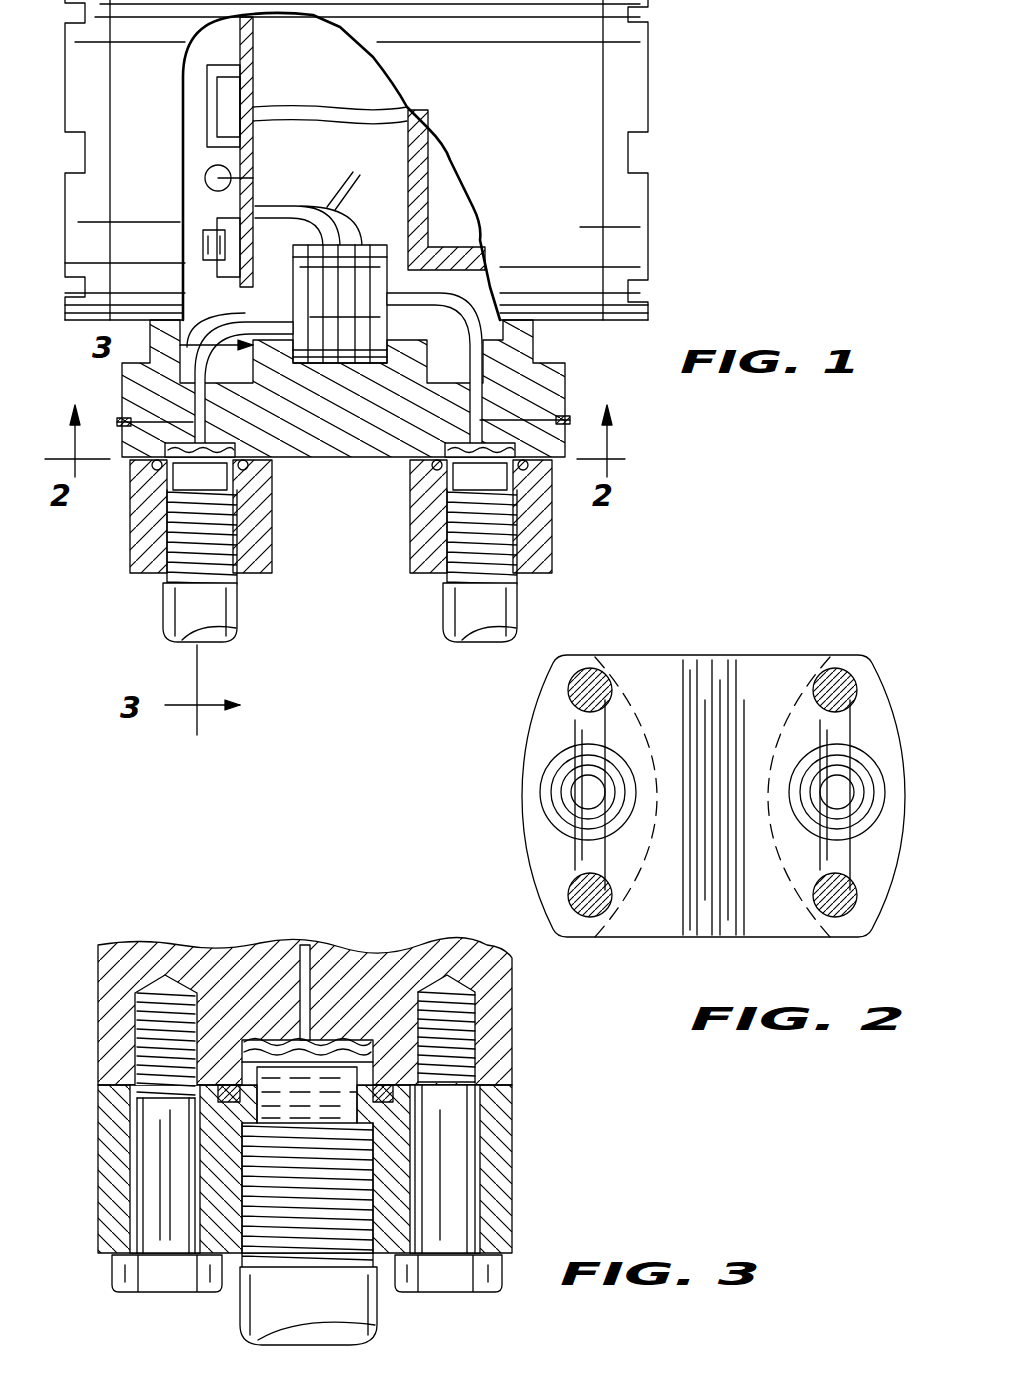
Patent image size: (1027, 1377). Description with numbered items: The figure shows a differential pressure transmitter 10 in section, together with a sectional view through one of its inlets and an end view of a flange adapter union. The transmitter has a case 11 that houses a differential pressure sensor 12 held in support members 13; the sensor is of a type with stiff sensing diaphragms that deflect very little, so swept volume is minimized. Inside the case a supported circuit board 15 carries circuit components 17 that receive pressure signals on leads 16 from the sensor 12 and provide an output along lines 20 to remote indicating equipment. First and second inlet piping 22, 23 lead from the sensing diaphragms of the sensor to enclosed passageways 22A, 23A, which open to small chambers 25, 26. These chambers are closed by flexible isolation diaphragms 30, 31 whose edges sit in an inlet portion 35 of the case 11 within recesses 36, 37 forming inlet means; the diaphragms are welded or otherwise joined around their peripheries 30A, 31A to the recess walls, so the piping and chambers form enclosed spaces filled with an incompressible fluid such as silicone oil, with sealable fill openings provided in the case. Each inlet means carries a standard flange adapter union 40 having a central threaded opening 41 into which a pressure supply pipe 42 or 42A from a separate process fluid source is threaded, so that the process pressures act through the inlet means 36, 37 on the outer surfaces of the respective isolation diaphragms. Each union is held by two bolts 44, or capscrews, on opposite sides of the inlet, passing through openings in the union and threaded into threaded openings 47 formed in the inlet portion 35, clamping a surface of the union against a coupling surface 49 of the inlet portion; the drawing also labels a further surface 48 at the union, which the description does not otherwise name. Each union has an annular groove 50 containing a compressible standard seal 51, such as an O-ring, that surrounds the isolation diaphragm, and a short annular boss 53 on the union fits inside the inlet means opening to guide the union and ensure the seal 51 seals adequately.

In FIG. 1, the pressure transmitter 10 is at (668, 170).
In FIG. 1, the case 11 is at (532, 366).
In FIG. 2, the case 11 is at (540, 733).
In FIG. 3, the case 11 is at (410, 960).
In FIG. 1, the differential pressure sensor 12 is at (362, 270).
In FIG. 1, the support members 13 is at (280, 427).
In FIG. 1, the circuit board 15 is at (254, 165).
In FIG. 1, the leads 16 is at (340, 200).
In FIG. 1, the circuit components 17 is at (205, 178).
In FIG. 1, the output lines 20 is at (310, 110).
In FIG. 1, the first inlet piping 22 is at (447, 300).
In FIG. 1, the enclosed passageway 22A is at (482, 407).
In FIG. 1, the second inlet piping 23 is at (212, 328).
In FIG. 1, the enclosed passageway 23A is at (190, 413).
In FIG. 3, the enclosed passageway 23A is at (306, 950).
In FIG. 1, the small chamber 25 is at (480, 455).
In FIG. 1, the small chamber 26 is at (205, 470).
In FIG. 1, the isolation diaphragm 30 is at (482, 470).
In FIG. 2, the isolation diaphragm 30 is at (805, 795).
In FIG. 1, the diaphragm periphery weld 30A is at (440, 447).
In FIG. 1, the isolation diaphragm 31 is at (200, 520).
In FIG. 2, the isolation diaphragm 31 is at (555, 795).
In FIG. 3, the isolation diaphragm 31 is at (268, 1035).
In FIG. 1, the diaphragm periphery weld 31A is at (257, 443).
In FIG. 3, the diaphragm periphery weld 31A is at (248, 1045).
In FIG. 1, the inlet portion 35 is at (353, 433).
In FIG. 2, the inlet portion 35 is at (697, 940).
In FIG. 1, the recess / inlet means 36 is at (527, 457).
In FIG. 1, the recess / inlet means 37 is at (133, 453).
In FIG. 3, the recess / inlet means 37 is at (340, 1055).
In FIG. 1, the flange adapter union 40 is at (273, 565).
In FIG. 2, the flange adapter union 40 is at (790, 700).
In FIG. 3, the flange adapter union 40 is at (512, 1182).
In FIG. 1, the central threaded opening 41 is at (233, 547).
In FIG. 3, the central threaded opening 41 is at (365, 1200).
In FIG. 1, the pressure supply pipe 42 is at (460, 620).
In FIG. 1, the pressure supply pipe 42A is at (237, 613).
In FIG. 3, the pressure supply pipe 42A is at (340, 1305).
In FIG. 2, the bolts (capscrews) 44 is at (595, 683).
In FIG. 3, the bolts (capscrews) 44 is at (158, 1017).
In FIG. 2, the threaded openings 47 is at (705, 670).
In FIG. 3, the threaded openings 47 is at (135, 1010).
In FIG. 1, the flange surface 48 is at (507, 457).
In FIG. 3, the flange surface 48 is at (105, 1113).
In FIG. 1, the coupling surface 49 is at (380, 467).
In FIG. 1, the annular groove 50 is at (163, 507).
In FIG. 3, the annular groove 50 is at (227, 1113).
In FIG. 1, the seal 51 is at (170, 463).
In FIG. 3, the seal 51 is at (445, 1105).
In FIG. 3, the annular boss 53 is at (395, 1080).